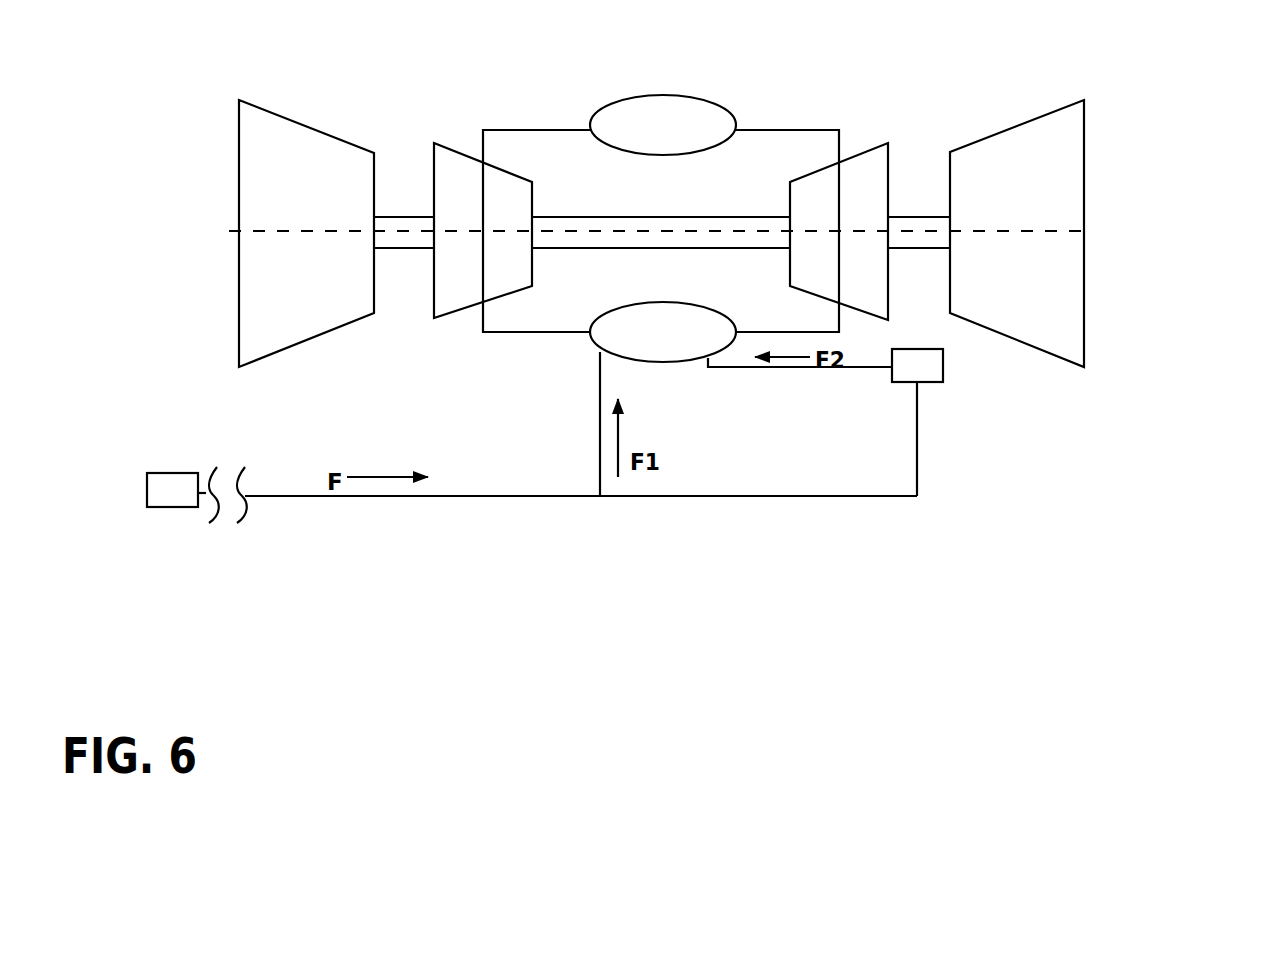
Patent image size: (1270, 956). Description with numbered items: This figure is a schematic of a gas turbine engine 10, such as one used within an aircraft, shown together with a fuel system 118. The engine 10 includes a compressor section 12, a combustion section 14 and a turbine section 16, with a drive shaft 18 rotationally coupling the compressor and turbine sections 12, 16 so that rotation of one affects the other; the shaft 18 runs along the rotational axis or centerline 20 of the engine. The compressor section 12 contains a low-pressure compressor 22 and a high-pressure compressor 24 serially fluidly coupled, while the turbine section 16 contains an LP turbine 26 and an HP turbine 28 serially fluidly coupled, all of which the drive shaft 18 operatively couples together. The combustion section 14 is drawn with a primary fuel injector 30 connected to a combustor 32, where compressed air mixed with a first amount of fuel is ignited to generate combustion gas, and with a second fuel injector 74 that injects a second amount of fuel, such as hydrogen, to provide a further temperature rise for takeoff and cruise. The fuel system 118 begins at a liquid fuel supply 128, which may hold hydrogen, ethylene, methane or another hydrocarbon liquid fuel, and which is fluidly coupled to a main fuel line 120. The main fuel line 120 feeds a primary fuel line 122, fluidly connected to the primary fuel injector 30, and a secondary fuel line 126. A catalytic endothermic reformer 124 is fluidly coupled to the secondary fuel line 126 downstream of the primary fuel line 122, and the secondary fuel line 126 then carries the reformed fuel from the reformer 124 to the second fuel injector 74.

The gas turbine engine 10 is at (1264, 114).
The compressor section 12 is at (262, 93).
The combustion section 14 is at (687, 113).
The turbine section 16 is at (1003, 95).
The drive shaft 18 is at (660, 217).
The engine central longitudinal axis 20 is at (1093, 230).
The low-pressure compressor 22 is at (343, 138).
The high-pressure compressor 24 is at (438, 318).
The LP turbine 26 is at (890, 173).
The HP turbine 28 is at (1085, 148).
The primary fuel injector 30 is at (592, 355).
The combustor 32 is at (680, 344).
The second fuel injector 74 is at (684, 365).
The fuel system 118 is at (937, 463).
The main fuel line 120 is at (492, 498).
The primary fuel line 122 is at (599, 457).
The catalytic endothermic reformer 124 is at (920, 367).
The secondary fuel line 126 is at (805, 368).
The liquid fuel supply 128 is at (190, 487).